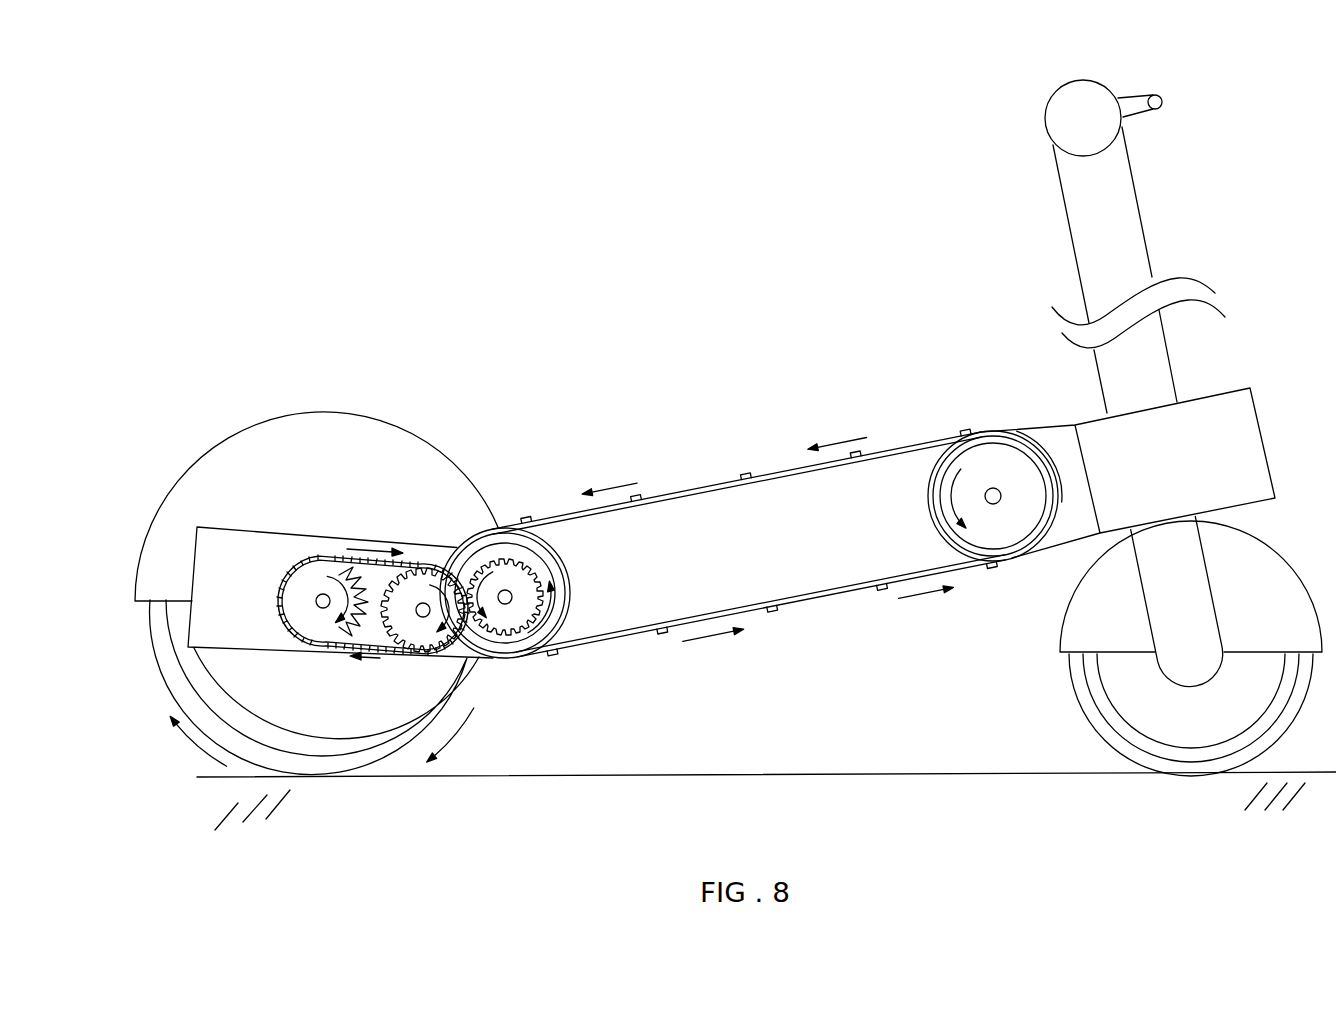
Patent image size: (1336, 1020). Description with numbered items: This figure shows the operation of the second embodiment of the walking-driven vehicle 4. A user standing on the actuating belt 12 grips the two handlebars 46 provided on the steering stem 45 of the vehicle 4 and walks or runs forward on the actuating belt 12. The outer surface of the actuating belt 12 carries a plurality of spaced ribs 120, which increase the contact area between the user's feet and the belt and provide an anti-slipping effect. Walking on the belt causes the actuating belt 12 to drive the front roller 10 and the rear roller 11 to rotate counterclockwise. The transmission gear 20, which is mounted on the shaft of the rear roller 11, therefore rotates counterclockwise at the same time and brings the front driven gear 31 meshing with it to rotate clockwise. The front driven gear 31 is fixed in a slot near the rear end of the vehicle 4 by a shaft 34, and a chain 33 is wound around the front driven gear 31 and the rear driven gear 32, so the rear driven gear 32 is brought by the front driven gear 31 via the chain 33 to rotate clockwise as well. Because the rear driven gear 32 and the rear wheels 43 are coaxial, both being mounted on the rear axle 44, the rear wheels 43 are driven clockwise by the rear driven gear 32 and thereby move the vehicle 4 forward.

The vehicle 4 is at (820, 630).
The front roller 10 is at (1003, 533).
The rear roller 11 is at (542, 565).
The actuating belt 12 is at (778, 478).
The spaced ribs 120 is at (955, 435).
The transmission gear 20 is at (505, 560).
The front driven gear 31 is at (416, 590).
The rear driven gear 32 is at (302, 592).
The chain 33 is at (360, 563).
The shaft 34 is at (424, 618).
The rear wheels 43 is at (182, 683).
The rear axle 44 is at (323, 612).
The steering stem 45 is at (1117, 248).
The handlebars 46 is at (1060, 120).